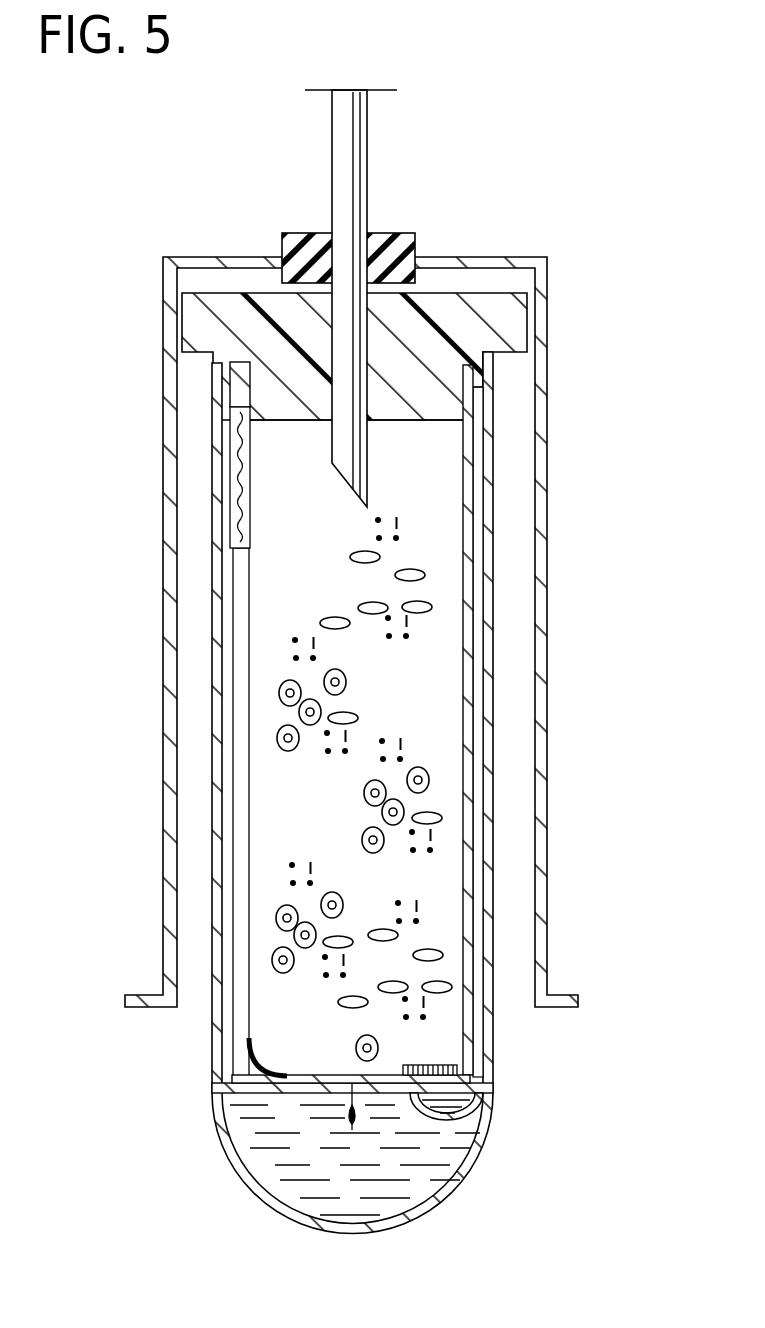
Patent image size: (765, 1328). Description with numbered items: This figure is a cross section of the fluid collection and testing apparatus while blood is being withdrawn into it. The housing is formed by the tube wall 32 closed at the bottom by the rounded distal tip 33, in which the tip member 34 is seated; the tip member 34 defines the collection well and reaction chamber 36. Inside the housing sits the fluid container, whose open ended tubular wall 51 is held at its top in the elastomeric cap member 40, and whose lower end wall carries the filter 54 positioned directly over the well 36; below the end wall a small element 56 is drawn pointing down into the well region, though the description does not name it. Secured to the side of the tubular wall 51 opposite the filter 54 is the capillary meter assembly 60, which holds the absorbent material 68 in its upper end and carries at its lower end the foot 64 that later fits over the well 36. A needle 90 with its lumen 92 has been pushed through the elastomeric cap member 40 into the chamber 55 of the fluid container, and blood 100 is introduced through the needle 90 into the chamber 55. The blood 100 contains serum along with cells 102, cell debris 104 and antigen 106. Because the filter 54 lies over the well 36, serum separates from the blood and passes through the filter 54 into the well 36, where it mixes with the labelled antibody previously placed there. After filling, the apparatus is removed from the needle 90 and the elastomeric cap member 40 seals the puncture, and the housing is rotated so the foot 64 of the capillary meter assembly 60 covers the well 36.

The needle 90 is at (368, 140).
The lumen 92 is at (353, 202).
The elastomeric cap member 40 is at (538, 330).
The tube wall 32 is at (497, 708).
The blood 100 is at (440, 463).
The absorbent material 68 is at (238, 520).
The capillary meter assembly 60 is at (235, 670).
The chamber 55 is at (320, 574).
The cell debris 104 is at (432, 607).
The tubular wall 51 is at (475, 762).
The cells 102 is at (405, 812).
The antigen 106 is at (433, 851).
The foot 64 is at (246, 1055).
The filter 54 is at (440, 1065).
The drop 56 is at (348, 1118).
The collection well and reaction chamber 36 is at (470, 1128).
The tip member 34 is at (262, 1168).
The rounded distal tip 33 is at (468, 1168).